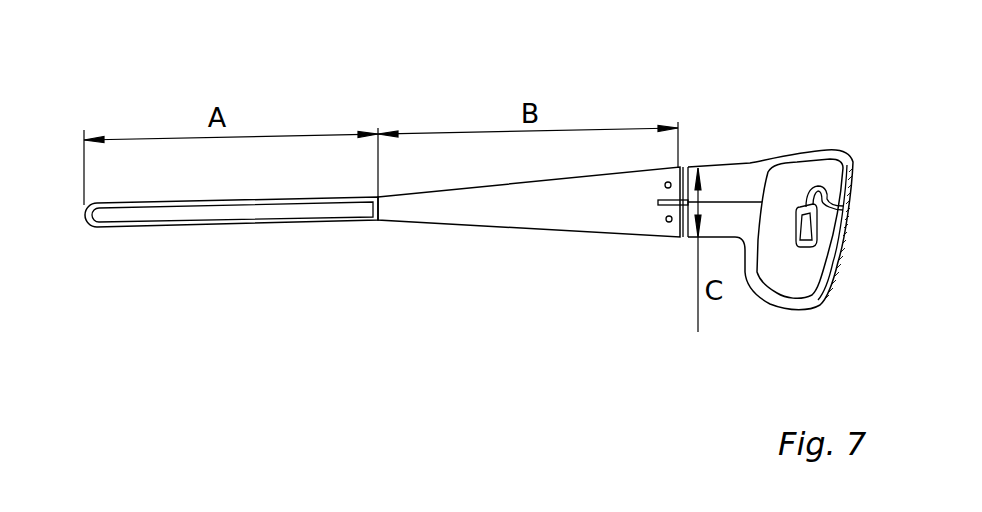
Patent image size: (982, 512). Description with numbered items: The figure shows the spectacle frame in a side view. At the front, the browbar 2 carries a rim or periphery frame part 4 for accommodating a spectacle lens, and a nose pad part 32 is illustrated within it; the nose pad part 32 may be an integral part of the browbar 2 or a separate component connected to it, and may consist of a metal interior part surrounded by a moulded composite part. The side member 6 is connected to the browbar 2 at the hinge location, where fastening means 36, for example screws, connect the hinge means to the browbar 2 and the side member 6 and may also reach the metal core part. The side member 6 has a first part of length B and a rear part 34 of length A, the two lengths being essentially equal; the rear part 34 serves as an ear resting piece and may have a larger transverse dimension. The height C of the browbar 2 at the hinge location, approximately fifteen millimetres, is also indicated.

The browbar 2 is at (777, 215).
The rim or periphery frame part 4 is at (775, 307).
The side member 6 is at (560, 230).
The nose pad part 32 is at (808, 246).
The rear part 34 is at (212, 228).
The fastening means 36 is at (666, 222).